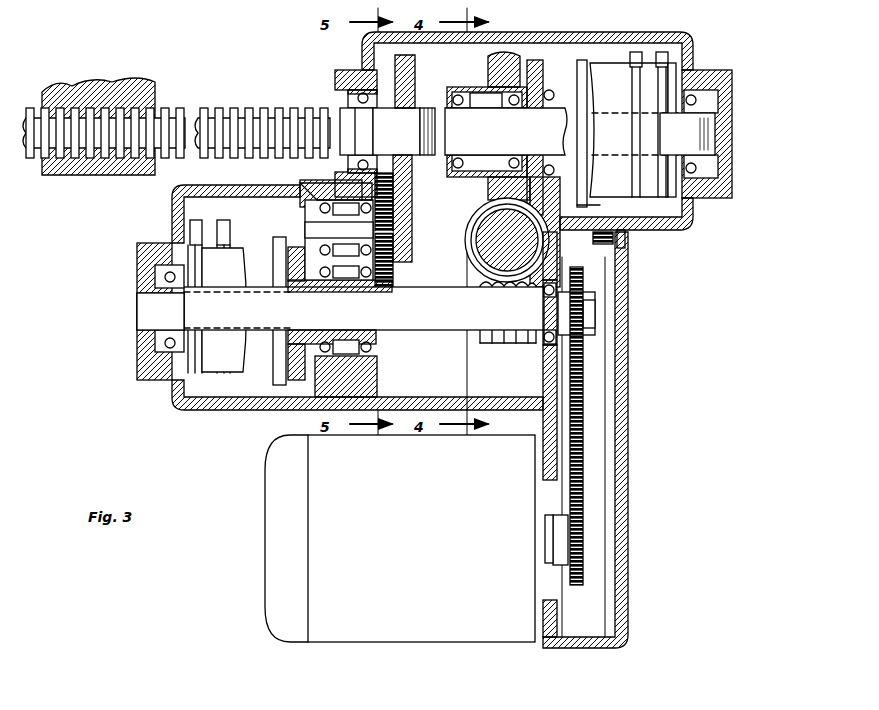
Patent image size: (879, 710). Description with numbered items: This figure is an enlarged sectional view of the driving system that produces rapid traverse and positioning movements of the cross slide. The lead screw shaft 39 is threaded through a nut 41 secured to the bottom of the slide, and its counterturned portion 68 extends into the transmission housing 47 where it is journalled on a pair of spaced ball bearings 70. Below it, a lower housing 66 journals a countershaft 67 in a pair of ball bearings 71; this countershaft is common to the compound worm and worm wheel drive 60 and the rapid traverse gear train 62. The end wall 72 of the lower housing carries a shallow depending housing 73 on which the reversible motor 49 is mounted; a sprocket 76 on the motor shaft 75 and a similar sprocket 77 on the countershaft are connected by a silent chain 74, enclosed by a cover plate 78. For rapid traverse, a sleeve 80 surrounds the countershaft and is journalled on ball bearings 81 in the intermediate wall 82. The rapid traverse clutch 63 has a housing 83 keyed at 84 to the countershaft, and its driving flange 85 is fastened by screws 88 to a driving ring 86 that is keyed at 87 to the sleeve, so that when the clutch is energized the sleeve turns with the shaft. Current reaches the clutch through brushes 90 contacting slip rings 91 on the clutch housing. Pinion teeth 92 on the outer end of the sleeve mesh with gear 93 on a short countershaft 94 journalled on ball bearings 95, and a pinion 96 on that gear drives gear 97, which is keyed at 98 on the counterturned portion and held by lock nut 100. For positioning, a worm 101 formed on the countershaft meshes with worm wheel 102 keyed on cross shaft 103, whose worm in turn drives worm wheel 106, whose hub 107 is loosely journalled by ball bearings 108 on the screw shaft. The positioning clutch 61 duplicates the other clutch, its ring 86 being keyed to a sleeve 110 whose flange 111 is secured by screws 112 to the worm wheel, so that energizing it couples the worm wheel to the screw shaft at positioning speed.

The lead screw shaft 39 is at (250, 116).
The nut 41 is at (132, 100).
The transmission housing 47 is at (662, 36).
The reversible motor 49 is at (280, 602).
The compound worm and worm wheel drive 60 is at (492, 350).
The positioning clutch 61 is at (653, 90).
The rapid traverse gear train 62 is at (410, 252).
The rapid traverse clutch 63 is at (190, 372).
The lower housing 66 is at (208, 356).
The countershaft 67 is at (340, 308).
The counterturned portion 68 is at (706, 128).
The ball bearings 70 is at (340, 95).
The ball bearings 71 is at (160, 346).
The end wall 72 is at (587, 393).
The depending housing 73 is at (570, 648).
The silent chain 74 is at (585, 500).
The motor shaft 75 is at (548, 541).
The sprocket 76 is at (560, 552).
The sprocket 77 is at (570, 305).
The cover plate 78 is at (626, 448).
The sleeve 80 is at (347, 329).
The ball bearings 81 is at (372, 329).
The intermediate wall 82 is at (318, 438).
The clutch housing 83 is at (245, 368).
The key 84 is at (660, 131).
The driving flange 85 is at (582, 70).
The driving ring 86 is at (596, 52).
The key 87 is at (604, 110).
The screws 88 is at (290, 246).
The brushes 90 is at (663, 52).
The slip rings 91 is at (662, 148).
The pinion teeth 92 is at (378, 346).
The gear 93 is at (393, 283).
The short countershaft 94 is at (339, 240).
The ball bearings 95 is at (338, 194).
The pinion 96 is at (398, 230).
The gear 97 is at (410, 191).
The key 98 is at (380, 131).
The lock nut 100 is at (427, 108).
The worm 101 is at (514, 350).
The worm wheel 102 is at (463, 243).
The cross shaft 103 is at (496, 234).
The worm wheel 106 is at (510, 62).
The hub 107 is at (458, 87).
The ball bearings 108 is at (465, 104).
The sleeve 110 is at (506, 131).
The flange 111 is at (588, 209).
The screws 112 is at (584, 178).